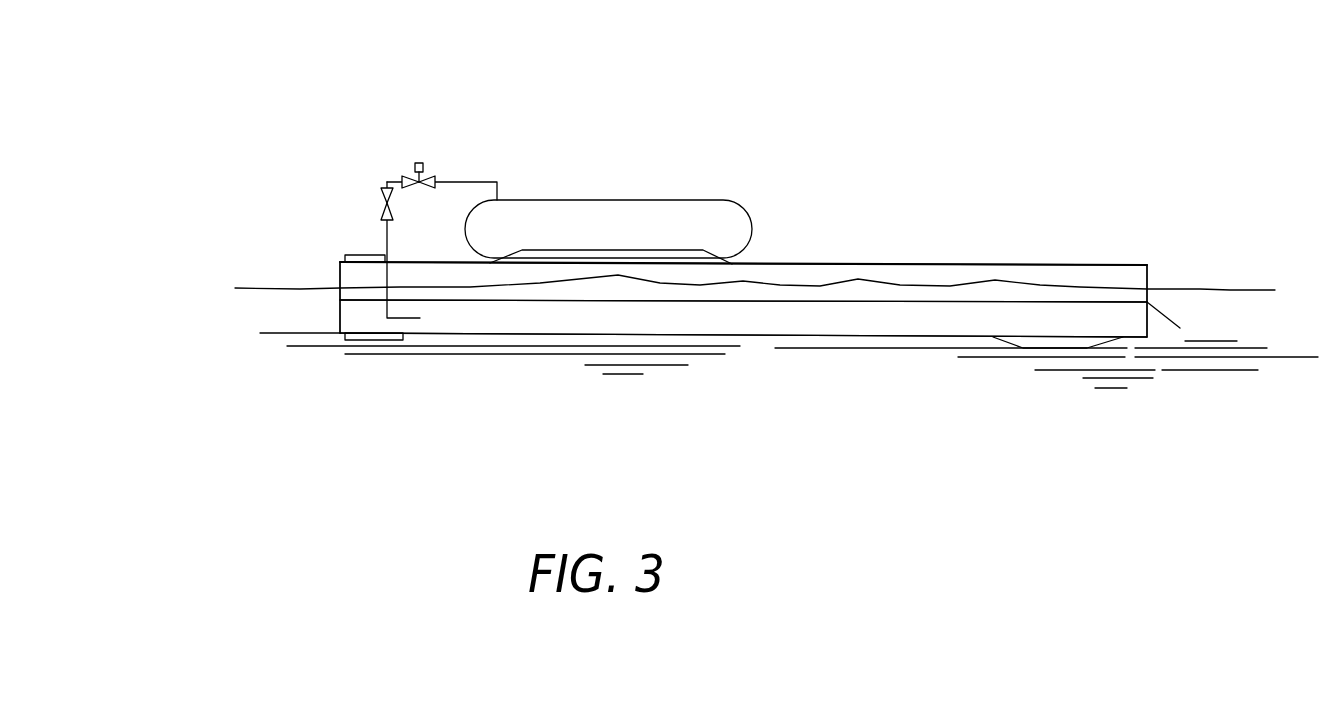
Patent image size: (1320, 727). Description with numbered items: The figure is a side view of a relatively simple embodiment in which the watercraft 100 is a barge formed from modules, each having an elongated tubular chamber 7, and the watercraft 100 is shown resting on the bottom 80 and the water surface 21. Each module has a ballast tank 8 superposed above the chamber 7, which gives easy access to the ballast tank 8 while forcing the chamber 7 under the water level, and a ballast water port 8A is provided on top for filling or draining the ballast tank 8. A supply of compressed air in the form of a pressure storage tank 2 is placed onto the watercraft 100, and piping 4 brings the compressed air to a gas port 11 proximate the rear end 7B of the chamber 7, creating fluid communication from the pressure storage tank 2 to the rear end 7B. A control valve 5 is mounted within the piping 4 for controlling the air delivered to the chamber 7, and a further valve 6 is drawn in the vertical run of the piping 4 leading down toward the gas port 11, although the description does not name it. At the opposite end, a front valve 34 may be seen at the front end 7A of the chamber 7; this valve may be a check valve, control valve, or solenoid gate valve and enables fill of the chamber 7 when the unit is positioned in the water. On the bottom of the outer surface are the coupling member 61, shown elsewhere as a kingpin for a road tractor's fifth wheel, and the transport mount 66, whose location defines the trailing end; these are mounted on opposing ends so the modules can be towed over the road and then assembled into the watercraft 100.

The watercraft 100 is at (182, 197).
The pressure storage tank 2 is at (510, 200).
The piping 4 is at (473, 177).
The control valve 5 is at (432, 170).
The shutoff valve 6 is at (375, 188).
The tubular chamber 7 is at (855, 327).
The front end of chamber 7A is at (1148, 330).
The rear end of chamber 7B is at (338, 327).
The ballast tank 8 is at (905, 270).
The ballast water port 8A is at (355, 255).
The gas port 11 is at (410, 318).
The water surface 21 is at (1232, 290).
The front valve 34 is at (1180, 328).
The coupling member 61 is at (360, 338).
The transport mount 66 is at (1050, 347).
The bottom 80 is at (697, 419).